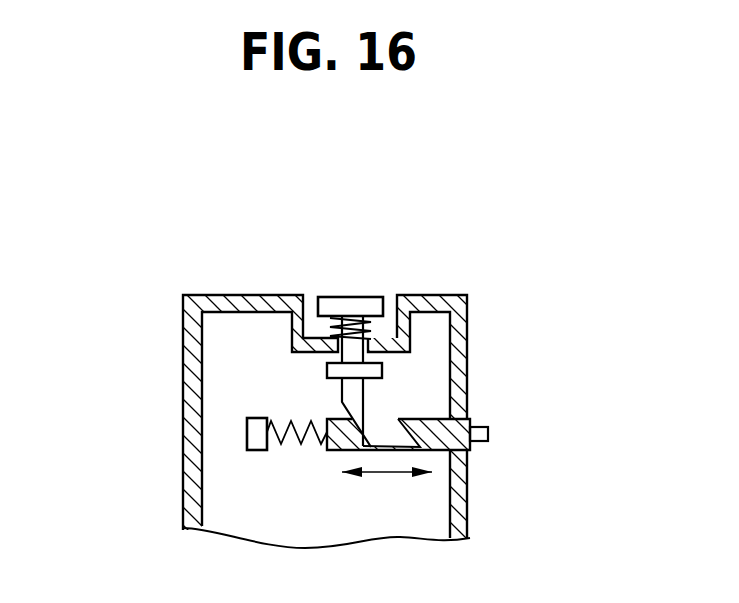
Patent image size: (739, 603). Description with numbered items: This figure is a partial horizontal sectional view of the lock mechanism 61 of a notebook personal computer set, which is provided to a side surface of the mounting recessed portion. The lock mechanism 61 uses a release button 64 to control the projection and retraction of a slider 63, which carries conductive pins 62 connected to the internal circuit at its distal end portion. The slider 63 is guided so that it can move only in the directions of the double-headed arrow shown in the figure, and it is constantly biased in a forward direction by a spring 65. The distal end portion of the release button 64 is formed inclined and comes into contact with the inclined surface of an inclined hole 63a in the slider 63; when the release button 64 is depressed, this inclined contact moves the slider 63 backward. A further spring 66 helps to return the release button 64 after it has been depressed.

The lock mechanism 61 is at (500, 293).
The conductive pin 62 is at (488, 434).
The slider 63 is at (339, 408).
The inclined hole 63a is at (383, 425).
The release button 64 is at (372, 297).
The spring 65 is at (294, 424).
The spring 66 is at (353, 297).